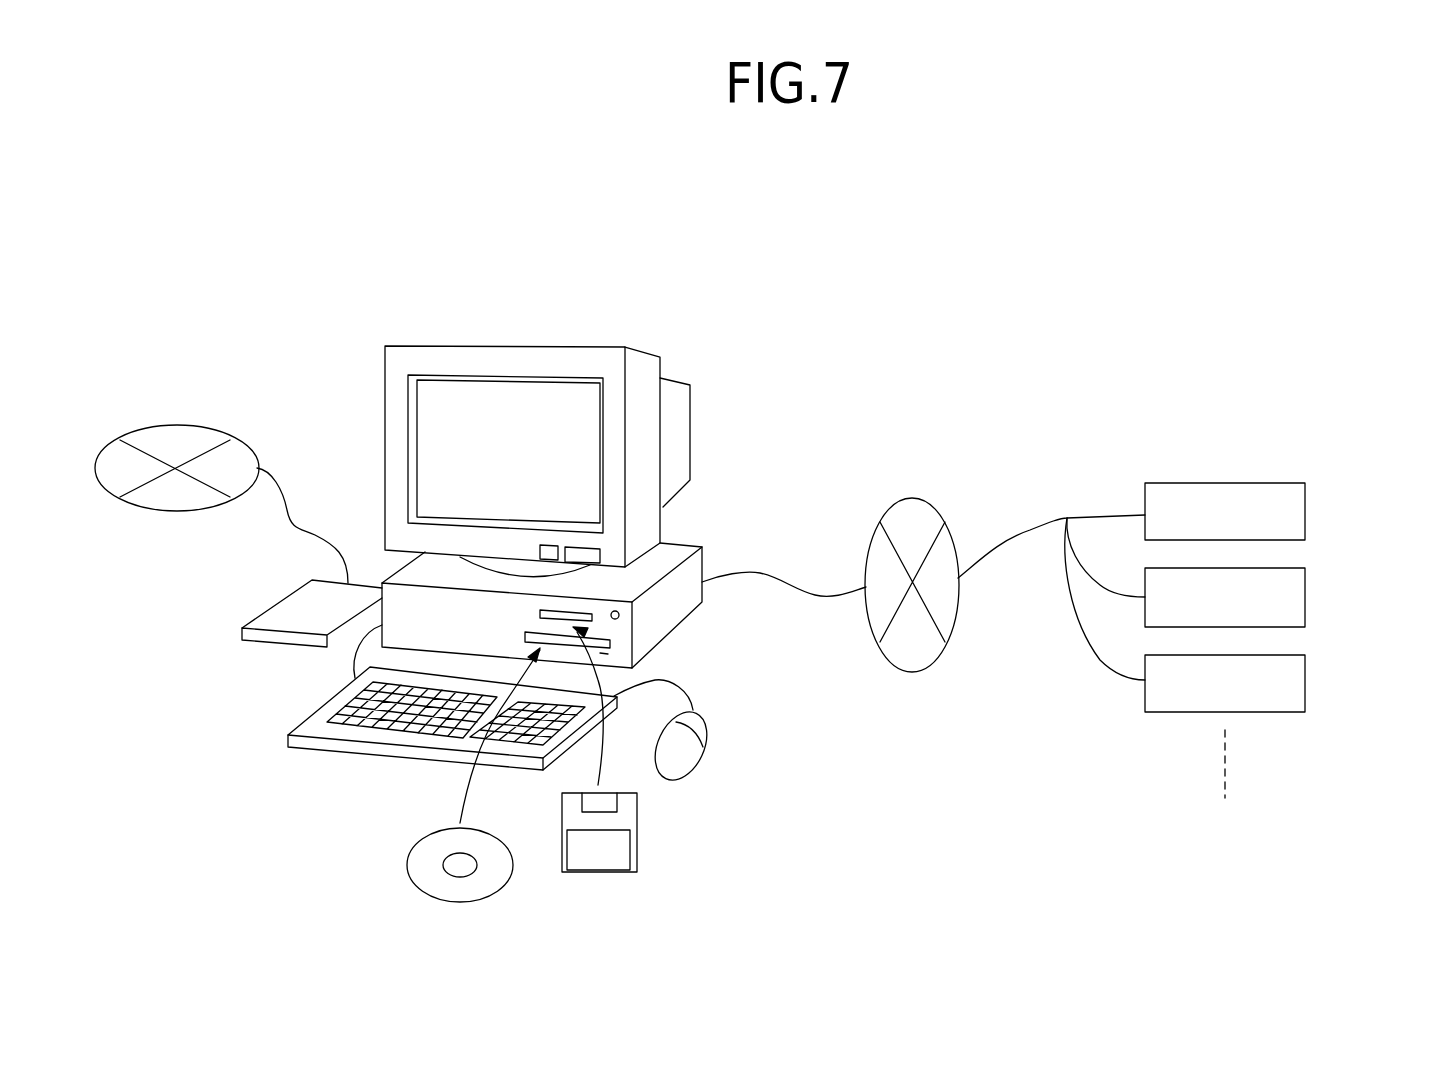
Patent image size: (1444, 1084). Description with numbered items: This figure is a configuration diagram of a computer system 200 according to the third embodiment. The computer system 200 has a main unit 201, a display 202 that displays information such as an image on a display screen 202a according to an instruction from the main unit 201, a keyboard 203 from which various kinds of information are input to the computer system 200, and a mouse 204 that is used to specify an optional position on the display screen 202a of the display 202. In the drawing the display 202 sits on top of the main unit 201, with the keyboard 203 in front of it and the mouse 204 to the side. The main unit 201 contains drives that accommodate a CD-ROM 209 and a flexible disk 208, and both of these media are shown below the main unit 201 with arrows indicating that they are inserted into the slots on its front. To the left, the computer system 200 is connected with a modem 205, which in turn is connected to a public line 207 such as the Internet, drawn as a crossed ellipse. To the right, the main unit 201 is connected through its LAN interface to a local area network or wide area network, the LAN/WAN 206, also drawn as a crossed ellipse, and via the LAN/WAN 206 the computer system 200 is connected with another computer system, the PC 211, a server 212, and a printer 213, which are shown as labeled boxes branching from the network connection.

The computer system 200 is at (615, 250).
The main unit 201 is at (677, 552).
The display 202 is at (650, 363).
The display screen 202a is at (500, 400).
The keyboard 203 is at (312, 718).
The mouse 204 is at (687, 758).
The modem 205 is at (285, 617).
The LAN/WAN 206 is at (912, 672).
The public line 207 is at (110, 497).
The flexible disk (FD) 208 is at (593, 873).
The CD-ROM 209 is at (407, 863).
The another computer system (PC) 211 is at (1305, 508).
The server 212 is at (1305, 593).
The printer 213 is at (1305, 678).